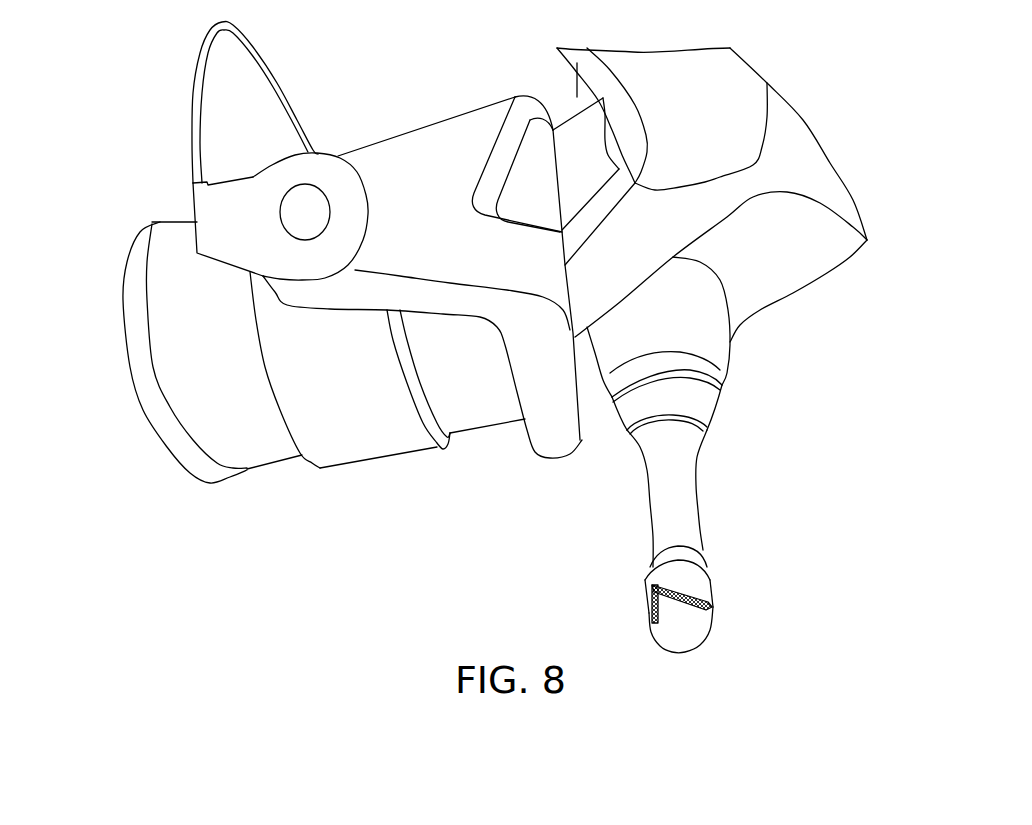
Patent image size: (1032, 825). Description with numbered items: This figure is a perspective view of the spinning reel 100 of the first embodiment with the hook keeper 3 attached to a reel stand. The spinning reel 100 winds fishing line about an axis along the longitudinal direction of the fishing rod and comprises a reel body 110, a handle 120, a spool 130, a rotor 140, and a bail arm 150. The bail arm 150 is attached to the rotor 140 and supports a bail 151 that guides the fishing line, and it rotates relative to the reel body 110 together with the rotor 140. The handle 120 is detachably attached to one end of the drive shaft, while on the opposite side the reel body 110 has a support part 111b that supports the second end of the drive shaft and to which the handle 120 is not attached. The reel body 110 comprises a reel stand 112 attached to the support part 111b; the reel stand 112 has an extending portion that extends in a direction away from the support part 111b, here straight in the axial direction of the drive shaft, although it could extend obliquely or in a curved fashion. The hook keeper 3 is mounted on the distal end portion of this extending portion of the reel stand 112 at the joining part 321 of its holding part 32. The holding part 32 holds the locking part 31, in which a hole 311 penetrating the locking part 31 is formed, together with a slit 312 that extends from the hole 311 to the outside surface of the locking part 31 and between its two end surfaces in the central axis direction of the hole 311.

The spinning reel 100 is at (821, 72).
The reel body 110 is at (800, 127).
The support part 111b is at (717, 312).
The reel stand 112 is at (688, 493).
The handle 120 is at (582, 92).
The spool 130 is at (185, 228).
The rotor 140 is at (435, 130).
The bail arm 150 is at (322, 153).
The bail 151 is at (193, 117).
The hook keeper 3 is at (680, 643).
The locking part 31 is at (707, 630).
The hole 311 is at (647, 622).
The slit 312 is at (692, 603).
The holding part 32 is at (703, 580).
The joining part 321 is at (707, 557).